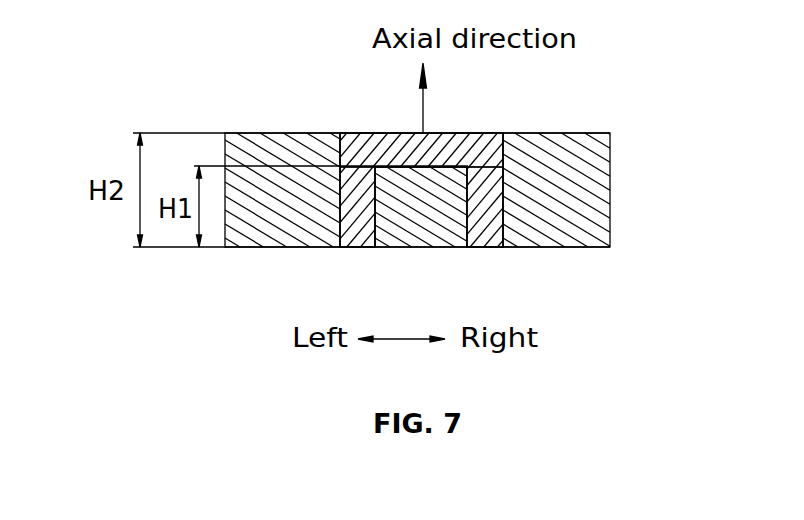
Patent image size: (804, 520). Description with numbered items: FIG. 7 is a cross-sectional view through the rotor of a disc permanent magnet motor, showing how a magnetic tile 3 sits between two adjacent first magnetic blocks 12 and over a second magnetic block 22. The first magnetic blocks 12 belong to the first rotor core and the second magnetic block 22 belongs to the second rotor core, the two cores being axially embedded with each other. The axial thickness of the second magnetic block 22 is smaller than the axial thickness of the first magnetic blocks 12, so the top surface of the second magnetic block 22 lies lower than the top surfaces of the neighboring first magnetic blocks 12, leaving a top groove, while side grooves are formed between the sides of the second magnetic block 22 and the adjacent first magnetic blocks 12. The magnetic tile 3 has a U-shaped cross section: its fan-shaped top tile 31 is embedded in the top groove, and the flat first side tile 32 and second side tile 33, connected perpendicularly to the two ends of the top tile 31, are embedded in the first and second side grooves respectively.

The magnetic tile 3 is at (413, 176).
The first magnetic block 12 is at (287, 145).
The second magnetic block 22 is at (423, 213).
The top tile 31 is at (450, 152).
The first side tile 32 is at (351, 224).
The second side tile 33 is at (492, 197).